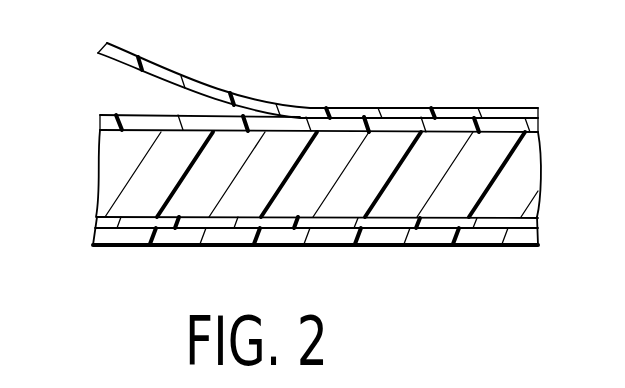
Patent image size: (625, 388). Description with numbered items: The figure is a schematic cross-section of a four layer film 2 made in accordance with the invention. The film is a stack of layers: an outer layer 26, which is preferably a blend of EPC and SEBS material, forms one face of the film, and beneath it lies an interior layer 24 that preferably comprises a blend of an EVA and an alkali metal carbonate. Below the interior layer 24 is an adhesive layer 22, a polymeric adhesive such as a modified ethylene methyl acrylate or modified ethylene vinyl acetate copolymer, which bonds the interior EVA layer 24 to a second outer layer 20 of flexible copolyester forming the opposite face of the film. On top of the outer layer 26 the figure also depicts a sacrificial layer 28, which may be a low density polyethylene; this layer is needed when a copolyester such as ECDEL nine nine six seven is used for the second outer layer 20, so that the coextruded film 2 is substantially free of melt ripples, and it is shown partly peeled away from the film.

The four layer film 2 is at (321, 143).
The second outer layer 20 is at (539, 243).
The adhesive layer 22 is at (96, 219).
The interior layer 24 is at (542, 170).
The outer layer 26 is at (100, 116).
The sacrificial layer 28 is at (116, 66).